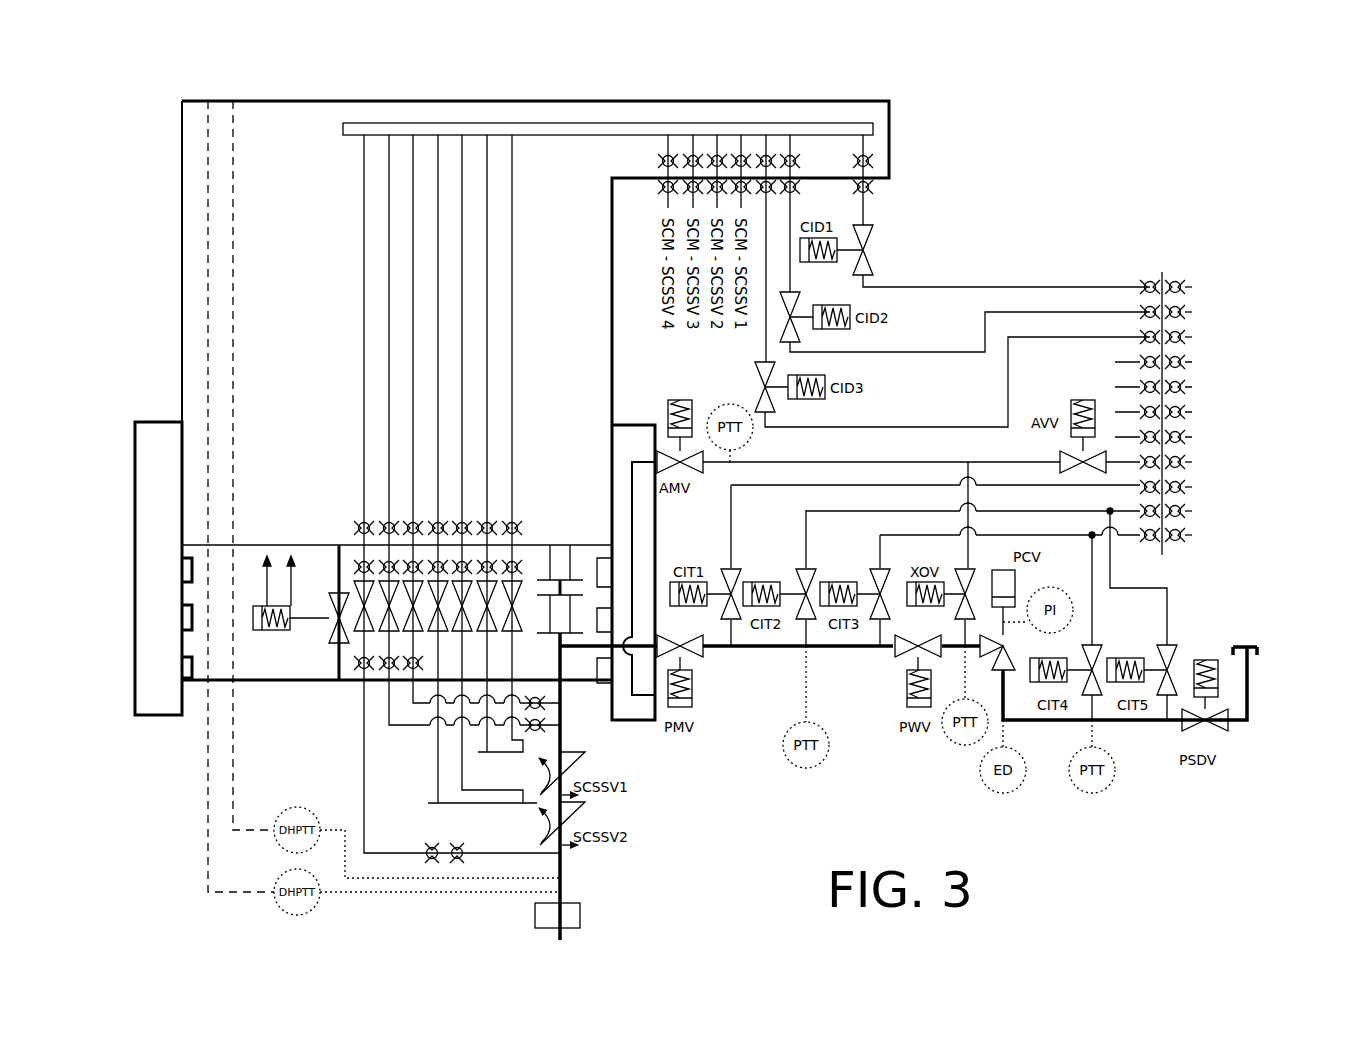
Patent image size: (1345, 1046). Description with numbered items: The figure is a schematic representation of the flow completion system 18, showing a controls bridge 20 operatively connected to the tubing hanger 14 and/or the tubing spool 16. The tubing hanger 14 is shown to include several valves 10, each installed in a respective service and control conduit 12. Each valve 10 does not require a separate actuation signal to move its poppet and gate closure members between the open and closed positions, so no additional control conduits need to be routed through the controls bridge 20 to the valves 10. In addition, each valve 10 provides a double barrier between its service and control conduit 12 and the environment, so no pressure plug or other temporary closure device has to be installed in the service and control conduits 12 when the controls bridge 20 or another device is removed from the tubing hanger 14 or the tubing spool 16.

The valve 10 is at (356, 560).
The service and control conduit 12 is at (356, 650).
The tubing hanger 14 is at (192, 598).
The tubing spool 16 is at (160, 421).
The flow completion system 18 is at (1040, 210).
The controls bridge 20 is at (288, 112).